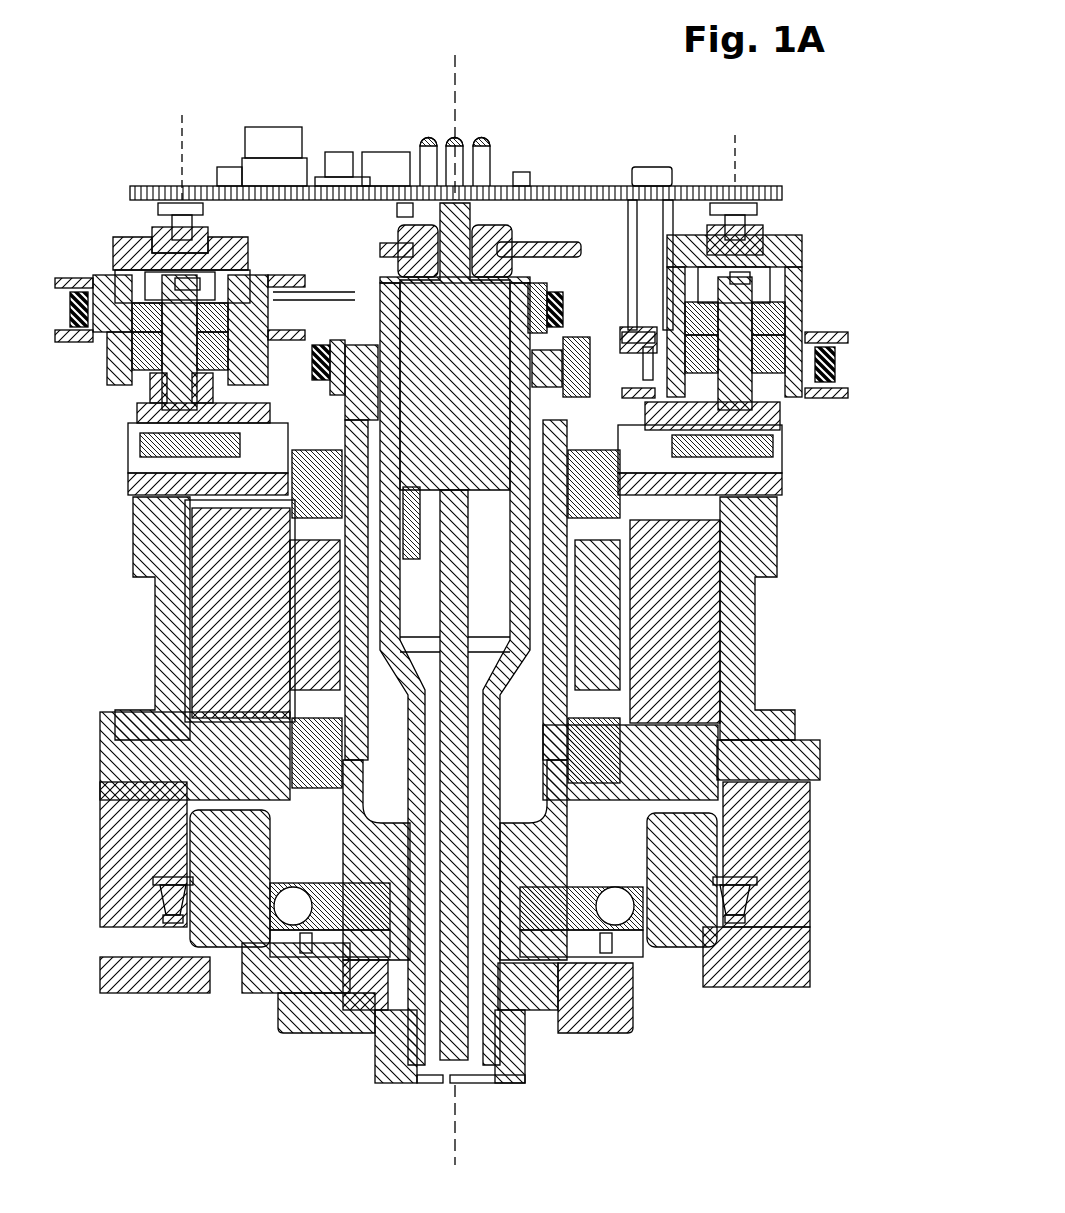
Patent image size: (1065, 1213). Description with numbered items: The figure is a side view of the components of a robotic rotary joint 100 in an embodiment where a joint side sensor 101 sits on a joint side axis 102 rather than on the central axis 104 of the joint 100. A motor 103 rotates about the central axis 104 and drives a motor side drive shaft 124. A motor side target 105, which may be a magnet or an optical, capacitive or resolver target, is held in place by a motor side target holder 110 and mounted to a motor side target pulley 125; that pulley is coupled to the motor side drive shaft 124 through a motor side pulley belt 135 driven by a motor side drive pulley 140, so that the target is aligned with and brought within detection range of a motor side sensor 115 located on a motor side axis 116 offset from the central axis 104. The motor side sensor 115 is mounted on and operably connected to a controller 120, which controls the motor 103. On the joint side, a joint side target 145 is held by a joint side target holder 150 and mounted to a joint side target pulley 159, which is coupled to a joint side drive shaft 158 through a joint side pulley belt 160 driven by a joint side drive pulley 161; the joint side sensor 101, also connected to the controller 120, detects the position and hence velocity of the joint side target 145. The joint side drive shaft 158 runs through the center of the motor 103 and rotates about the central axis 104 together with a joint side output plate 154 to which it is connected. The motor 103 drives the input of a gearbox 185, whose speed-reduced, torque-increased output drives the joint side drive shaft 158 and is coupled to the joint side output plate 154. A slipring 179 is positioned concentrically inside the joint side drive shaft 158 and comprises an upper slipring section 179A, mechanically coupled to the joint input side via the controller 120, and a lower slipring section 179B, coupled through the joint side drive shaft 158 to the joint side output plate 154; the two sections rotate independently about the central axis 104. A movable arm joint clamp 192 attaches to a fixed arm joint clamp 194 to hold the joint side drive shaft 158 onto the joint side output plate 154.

The robotic rotary joint 100 is at (251, 1066).
The joint side sensor 101 is at (176, 203).
The joint side axis 102 is at (183, 150).
The motor 103 is at (205, 630).
The central axis 104 is at (458, 72).
The motor side target 105 is at (765, 228).
The motor side target holder 110 is at (800, 258).
The motor side sensor 115 is at (742, 213).
The motor side axis 116 is at (736, 150).
The controller 120 is at (532, 345).
The motor side drive shaft 124 is at (600, 380).
The motor side target pulley 125 is at (836, 355).
The motor side pulley belt 135 is at (640, 410).
The motor side drive pulley 140 is at (290, 412).
The joint side target 145 is at (150, 237).
The joint side target holder 150 is at (113, 252).
The joint side output plate 154 is at (595, 1025).
The joint side drive shaft 158 is at (352, 300).
The joint side target pulley 159 is at (57, 325).
The joint side pulley belt 160 is at (340, 297).
The joint side drive pulley 161 is at (536, 300).
The slipring 179 is at (445, 285).
The upper slipring section 179A is at (478, 245).
The lower slipring section 179B is at (405, 455).
The gearbox 185 is at (640, 957).
The movable arm joint clamp 192 is at (378, 1085).
The fixed arm joint clamp 194 is at (515, 1085).